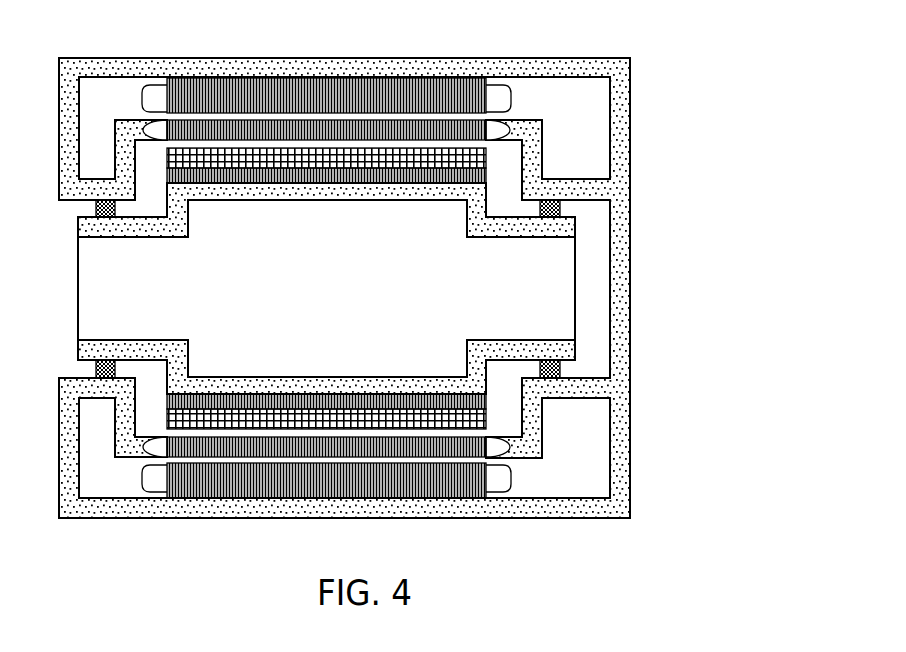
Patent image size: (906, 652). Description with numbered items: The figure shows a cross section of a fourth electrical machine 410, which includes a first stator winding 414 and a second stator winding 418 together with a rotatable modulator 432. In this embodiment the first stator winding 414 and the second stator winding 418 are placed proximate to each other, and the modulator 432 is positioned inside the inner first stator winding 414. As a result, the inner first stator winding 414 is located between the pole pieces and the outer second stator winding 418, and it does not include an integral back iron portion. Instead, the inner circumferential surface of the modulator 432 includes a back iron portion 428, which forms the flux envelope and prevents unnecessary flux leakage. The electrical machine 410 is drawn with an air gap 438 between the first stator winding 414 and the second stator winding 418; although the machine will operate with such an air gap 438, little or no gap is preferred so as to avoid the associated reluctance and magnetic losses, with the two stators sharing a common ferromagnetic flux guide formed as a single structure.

The electrical machine 410 is at (680, 74).
The second stator winding 418 is at (500, 98).
The first stator winding 414 is at (512, 132).
The back iron portion 428 is at (212, 183).
The air gap 438 is at (255, 117).
The modulator 432 is at (373, 163).